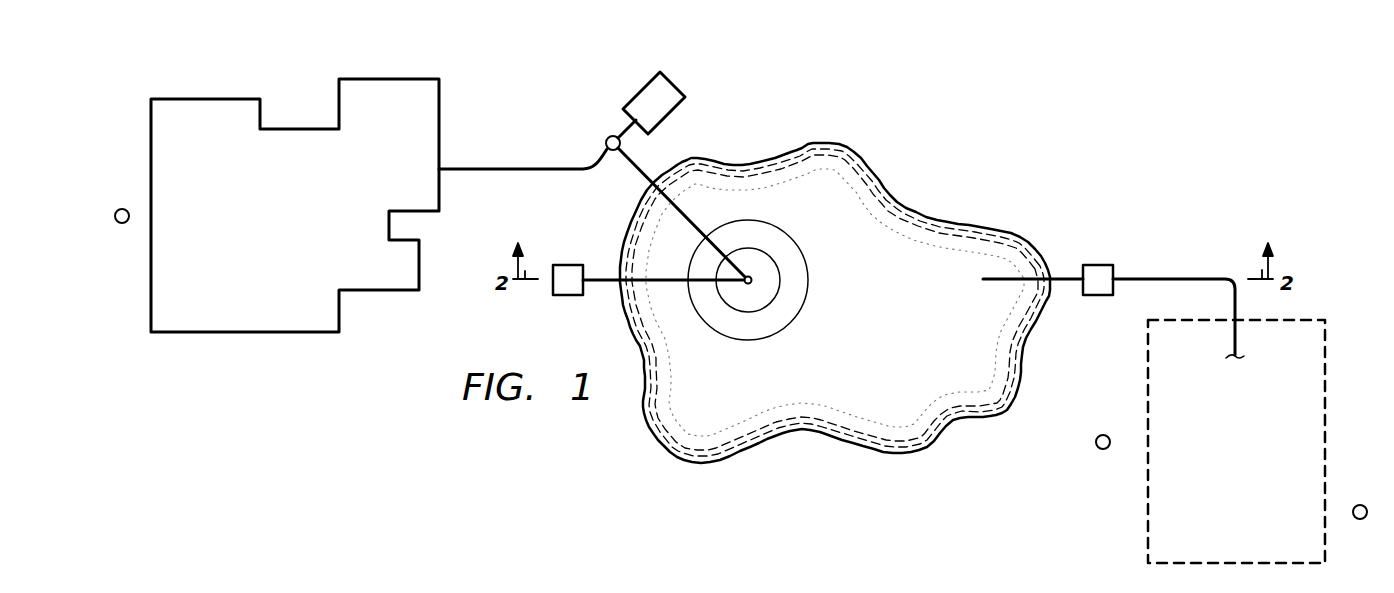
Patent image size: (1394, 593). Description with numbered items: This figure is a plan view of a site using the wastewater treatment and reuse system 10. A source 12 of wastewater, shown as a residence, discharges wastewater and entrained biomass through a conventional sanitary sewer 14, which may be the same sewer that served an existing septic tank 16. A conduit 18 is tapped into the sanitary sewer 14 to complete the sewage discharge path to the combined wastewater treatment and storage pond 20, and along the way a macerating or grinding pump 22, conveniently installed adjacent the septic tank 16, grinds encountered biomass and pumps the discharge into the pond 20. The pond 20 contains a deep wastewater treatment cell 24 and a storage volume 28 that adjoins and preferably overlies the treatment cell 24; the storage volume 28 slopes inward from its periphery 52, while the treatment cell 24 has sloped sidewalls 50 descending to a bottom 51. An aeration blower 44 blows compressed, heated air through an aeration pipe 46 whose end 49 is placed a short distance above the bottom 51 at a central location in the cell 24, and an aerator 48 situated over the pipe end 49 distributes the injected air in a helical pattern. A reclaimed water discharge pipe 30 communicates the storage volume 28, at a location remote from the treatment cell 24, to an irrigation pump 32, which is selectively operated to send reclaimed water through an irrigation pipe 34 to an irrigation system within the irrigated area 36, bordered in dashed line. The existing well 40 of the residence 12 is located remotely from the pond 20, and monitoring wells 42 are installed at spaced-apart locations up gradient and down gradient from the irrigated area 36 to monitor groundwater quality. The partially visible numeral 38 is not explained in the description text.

The wastewater treatment and reuse system 10 is at (898, 126).
The source of wastewater 12 is at (231, 333).
The sanitary sewer 14 is at (512, 167).
The septic tank 16 is at (673, 78).
The conduit 18 is at (632, 170).
The wastewater treatment and storage pond 20 is at (932, 212).
The macerating pump 22 is at (606, 137).
The wastewater treatment cell 24 is at (768, 330).
The storage volume 28 is at (880, 373).
The reclaimed water discharge pipe 30 is at (1062, 275).
The irrigation pump 32 is at (1097, 263).
The irrigation pipe 34 is at (1170, 277).
The irrigated area 36 is at (1147, 523).
The discharge field 38 is at (1270, 590).
The existing well 40 is at (120, 208).
The monitoring wells 42 is at (1105, 450).
The aeration blower 44 is at (570, 296).
The aeration pipe 46 is at (602, 283).
The aerator 48 is at (773, 267).
The end of the aeration pipe 49 is at (722, 306).
The sidewalls 50 is at (797, 300).
The bottom 51 is at (749, 300).
The periphery 52 is at (810, 437).